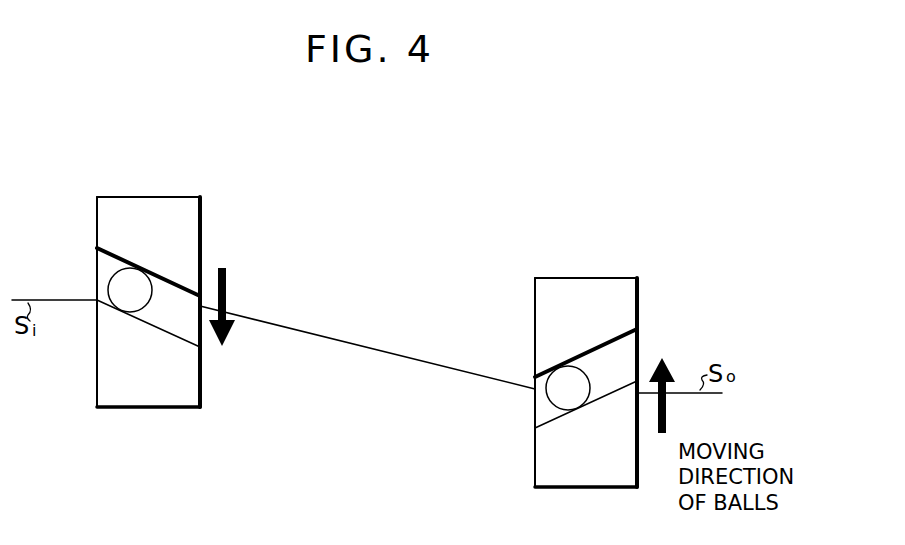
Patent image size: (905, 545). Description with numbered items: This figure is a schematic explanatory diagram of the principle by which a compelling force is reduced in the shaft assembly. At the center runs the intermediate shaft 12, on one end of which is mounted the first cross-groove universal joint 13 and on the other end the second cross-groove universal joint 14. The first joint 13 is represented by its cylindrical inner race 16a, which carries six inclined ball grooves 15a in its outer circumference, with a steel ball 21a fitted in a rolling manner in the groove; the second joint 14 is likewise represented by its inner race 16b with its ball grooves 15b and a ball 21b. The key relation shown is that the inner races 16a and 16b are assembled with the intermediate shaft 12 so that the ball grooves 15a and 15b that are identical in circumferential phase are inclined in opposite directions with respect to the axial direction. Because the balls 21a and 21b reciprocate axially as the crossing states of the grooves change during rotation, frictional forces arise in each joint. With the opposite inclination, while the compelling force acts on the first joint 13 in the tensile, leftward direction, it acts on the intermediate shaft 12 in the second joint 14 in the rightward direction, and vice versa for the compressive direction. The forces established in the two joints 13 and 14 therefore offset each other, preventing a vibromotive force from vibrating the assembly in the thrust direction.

The intermediate shaft 12 is at (391, 354).
The first cross-groove universal joint 13 is at (190, 188).
The second cross-groove universal joint 14 is at (620, 271).
The ball grooves of first inner race 15a is at (187, 338).
The ball grooves of second inner race 15b is at (625, 338).
The inner race of first joint 16a is at (193, 219).
The inner race of second joint 16b is at (625, 296).
The balls of first joint 21a is at (118, 288).
The balls of second joint 21b is at (565, 388).